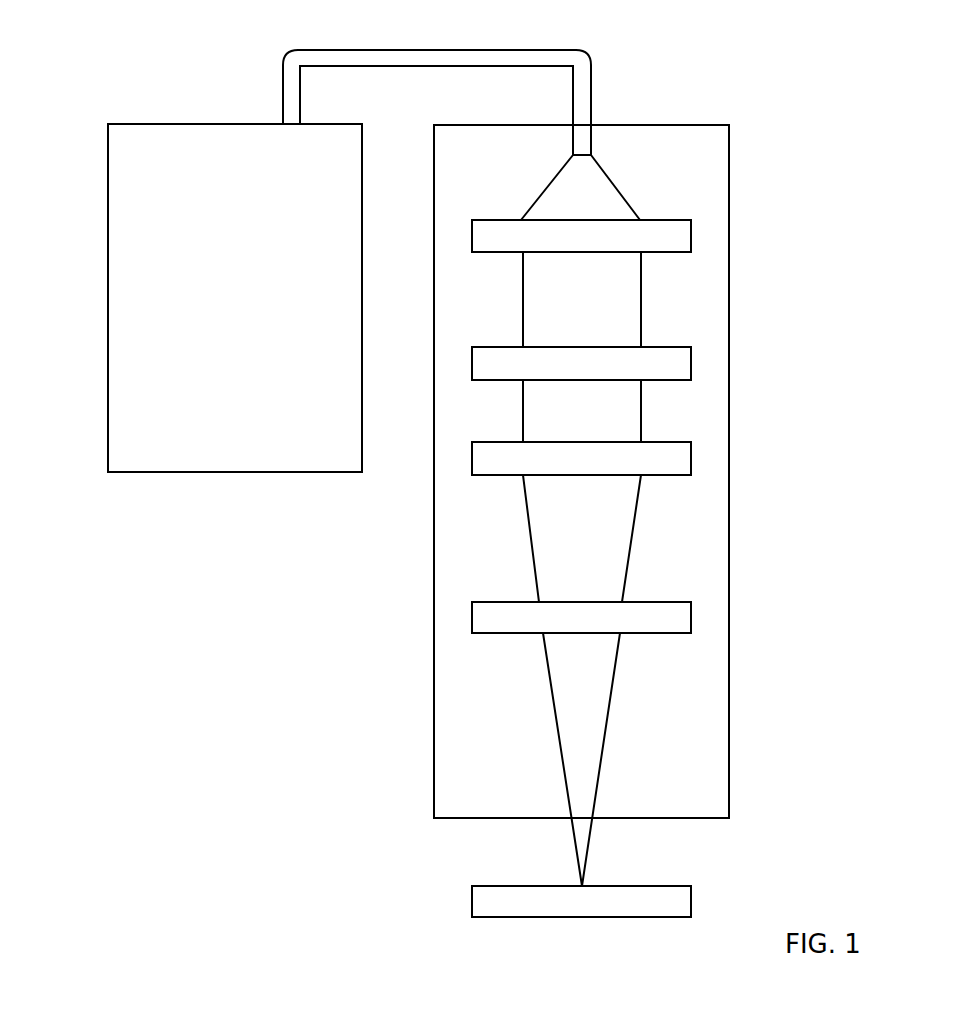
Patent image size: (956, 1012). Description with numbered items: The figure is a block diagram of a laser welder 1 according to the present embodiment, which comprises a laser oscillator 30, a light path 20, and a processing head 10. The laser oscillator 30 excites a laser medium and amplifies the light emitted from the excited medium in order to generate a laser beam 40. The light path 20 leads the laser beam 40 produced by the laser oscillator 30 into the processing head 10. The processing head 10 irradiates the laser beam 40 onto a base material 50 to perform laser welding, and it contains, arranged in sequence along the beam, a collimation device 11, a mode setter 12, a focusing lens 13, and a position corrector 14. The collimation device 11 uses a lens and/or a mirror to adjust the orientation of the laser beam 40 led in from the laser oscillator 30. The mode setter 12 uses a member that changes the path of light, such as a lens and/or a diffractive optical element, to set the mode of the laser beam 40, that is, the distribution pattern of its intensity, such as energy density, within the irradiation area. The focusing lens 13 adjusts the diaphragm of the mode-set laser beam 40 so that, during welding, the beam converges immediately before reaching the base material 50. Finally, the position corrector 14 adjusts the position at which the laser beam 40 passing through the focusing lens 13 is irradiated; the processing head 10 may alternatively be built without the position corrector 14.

The laser welder 1 is at (135, 72).
The processing head 10 is at (655, 125).
The collimation device 11 is at (686, 240).
The mode setter 12 is at (686, 358).
The focusing lens 13 is at (686, 455).
The position corrector 14 is at (686, 612).
The light path 20 is at (588, 52).
The laser oscillator 30 is at (108, 284).
The laser beam 40 is at (606, 737).
The base material 50 is at (688, 898).